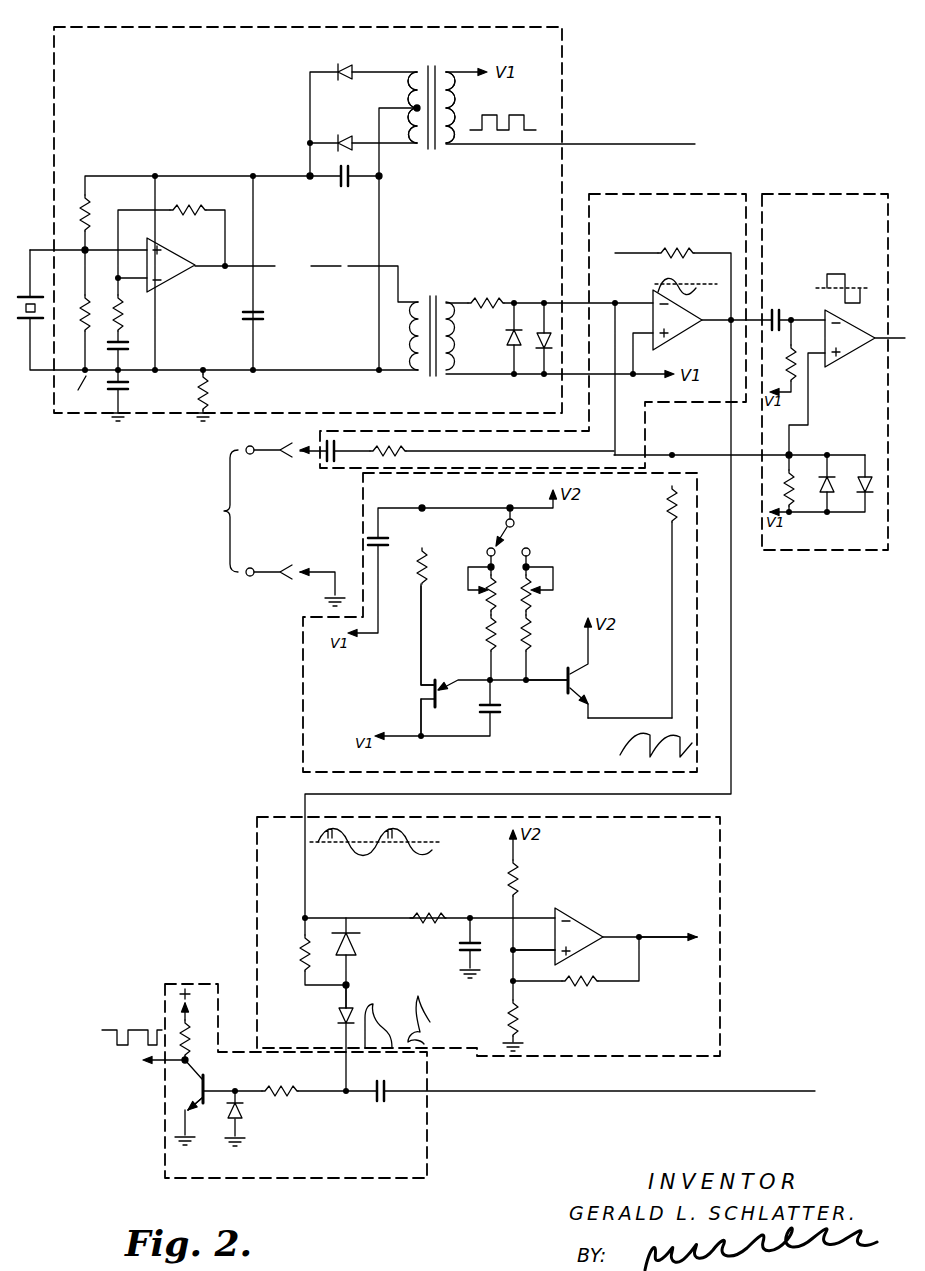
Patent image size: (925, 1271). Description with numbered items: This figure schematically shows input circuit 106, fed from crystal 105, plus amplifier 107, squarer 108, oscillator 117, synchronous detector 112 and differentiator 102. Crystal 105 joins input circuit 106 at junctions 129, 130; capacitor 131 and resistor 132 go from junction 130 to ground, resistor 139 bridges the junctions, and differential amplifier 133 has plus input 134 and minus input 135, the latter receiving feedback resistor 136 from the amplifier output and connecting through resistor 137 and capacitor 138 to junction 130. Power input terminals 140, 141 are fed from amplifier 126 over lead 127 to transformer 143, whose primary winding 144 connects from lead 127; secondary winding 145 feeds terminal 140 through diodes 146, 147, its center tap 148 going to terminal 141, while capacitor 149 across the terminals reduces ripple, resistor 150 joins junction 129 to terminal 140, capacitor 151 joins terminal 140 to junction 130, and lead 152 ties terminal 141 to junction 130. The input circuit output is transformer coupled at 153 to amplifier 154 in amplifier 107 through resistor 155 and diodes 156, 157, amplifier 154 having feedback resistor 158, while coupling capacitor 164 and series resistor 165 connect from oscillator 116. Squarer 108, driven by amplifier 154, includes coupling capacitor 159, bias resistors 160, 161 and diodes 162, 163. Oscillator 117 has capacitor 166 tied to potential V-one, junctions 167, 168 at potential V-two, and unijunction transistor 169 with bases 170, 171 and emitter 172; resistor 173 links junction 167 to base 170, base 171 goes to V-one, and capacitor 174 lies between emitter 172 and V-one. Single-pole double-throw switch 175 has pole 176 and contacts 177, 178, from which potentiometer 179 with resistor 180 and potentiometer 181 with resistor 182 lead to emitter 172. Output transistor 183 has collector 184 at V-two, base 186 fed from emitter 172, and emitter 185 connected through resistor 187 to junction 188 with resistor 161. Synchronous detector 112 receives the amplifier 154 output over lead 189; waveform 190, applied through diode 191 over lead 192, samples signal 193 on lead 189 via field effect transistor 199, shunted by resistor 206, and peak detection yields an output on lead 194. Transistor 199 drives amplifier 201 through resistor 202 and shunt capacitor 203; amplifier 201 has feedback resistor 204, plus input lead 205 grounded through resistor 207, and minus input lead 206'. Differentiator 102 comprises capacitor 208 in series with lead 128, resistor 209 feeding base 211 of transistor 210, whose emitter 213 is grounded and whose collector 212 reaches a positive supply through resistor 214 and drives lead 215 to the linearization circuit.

The differentiator 102 is at (434, 1139).
The crystal 105 is at (26, 354).
The input circuit 106 is at (566, 85).
The amplifier 107 is at (630, 190).
The squarer 108 is at (794, 189).
The synchronous detector 112 is at (728, 970).
The oscillator 116 is at (261, 524).
The oscillator 117 is at (298, 696).
The amplifier 126 is at (848, 368).
The lead 127 is at (678, 144).
The lead 128 is at (720, 1091).
The junction 129 is at (82, 249).
The junction 130 is at (68, 388).
The capacitor 131 is at (127, 391).
The resistor 132 is at (212, 390).
The differential amplifier 133 is at (181, 279).
The plus input 134 is at (138, 246).
The minus input 135 is at (152, 291).
The feedback resistor 136 is at (198, 211).
The resistor 137 is at (135, 318).
The capacitor 138 is at (132, 346).
The resistor 139 is at (78, 308).
The power input terminal 140 is at (309, 172).
The power input terminal 141 is at (383, 180).
The transformer 143 is at (430, 58).
The primary winding 144 is at (460, 104).
The secondary winding 145 is at (414, 130).
The diode 146 is at (346, 67).
The diode 147 is at (344, 138).
The center tap 148 is at (416, 107).
The capacitor 149 is at (334, 186).
The resistor 150 is at (86, 218).
The capacitor 151 is at (262, 320).
The lead 152 is at (383, 222).
The transformer 153 is at (429, 284).
The amplifier 154 is at (684, 336).
The resistor 155 is at (474, 300).
The diode 156 is at (505, 340).
The diode 157 is at (539, 357).
The feedback resistor 158 is at (690, 252).
The coupling capacitor 159 is at (775, 315).
The bias resistor 160 is at (798, 354).
The bias resistor 161 is at (815, 480).
The diode 162 is at (826, 495).
The diode 163 is at (863, 492).
The coupling capacitor 164 is at (337, 451).
The series resistor 165 is at (411, 452).
The capacitor 166 is at (385, 555).
The junction 167 is at (428, 507).
The junction 168 is at (531, 505).
The unijunction transistor 169 is at (412, 693).
The base 170 is at (455, 658).
The base 171 is at (437, 703).
The emitter 172 is at (475, 673).
The resistor 173 is at (433, 549).
The capacitor 174 is at (495, 725).
The single-pole, double-throw switch 175 is at (530, 538).
The pole 176 is at (486, 549).
The contact 177 is at (476, 568).
The contact 178 is at (531, 553).
The potentiometer 179 is at (480, 598).
The resistor 180 is at (490, 642).
The potentiometer 181 is at (538, 598).
The resistor 182 is at (531, 640).
The output transistor 183 is at (596, 678).
The collector 184 is at (572, 669).
The emitter 185 is at (587, 704).
The base 186 is at (542, 683).
The resistor 187 is at (668, 505).
The junction 188 is at (710, 453).
The lead 189 is at (733, 668).
The waveform 190 is at (426, 1042).
The diode 191 is at (340, 1013).
The lead 192 is at (340, 1035).
The signal 193 is at (434, 844).
The lead 194 is at (659, 936).
The field effect transistor 199 is at (364, 948).
The amplifier 201 is at (588, 915).
The resistor 202 is at (420, 910).
The shunt capacitor 203 is at (460, 948).
The feedback resistor 204 is at (587, 983).
The plus input lead 205 is at (550, 948).
The resistor 206 is at (286, 957).
The minus input lead 206' is at (542, 888).
The resistor 207 is at (525, 1018).
The capacitor 208 is at (381, 1092).
The resistor 209 is at (288, 1092).
The transistor 210 is at (214, 1077).
The base 211 is at (222, 1118).
The collector 212 is at (188, 1070).
The emitter 213 is at (198, 1106).
The resistor 214 is at (190, 1044).
The lead 215 is at (162, 1065).